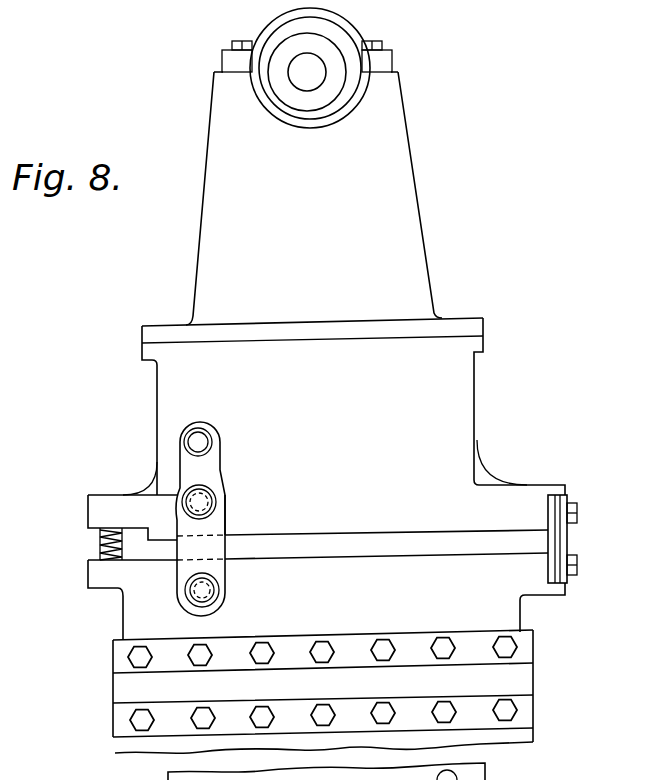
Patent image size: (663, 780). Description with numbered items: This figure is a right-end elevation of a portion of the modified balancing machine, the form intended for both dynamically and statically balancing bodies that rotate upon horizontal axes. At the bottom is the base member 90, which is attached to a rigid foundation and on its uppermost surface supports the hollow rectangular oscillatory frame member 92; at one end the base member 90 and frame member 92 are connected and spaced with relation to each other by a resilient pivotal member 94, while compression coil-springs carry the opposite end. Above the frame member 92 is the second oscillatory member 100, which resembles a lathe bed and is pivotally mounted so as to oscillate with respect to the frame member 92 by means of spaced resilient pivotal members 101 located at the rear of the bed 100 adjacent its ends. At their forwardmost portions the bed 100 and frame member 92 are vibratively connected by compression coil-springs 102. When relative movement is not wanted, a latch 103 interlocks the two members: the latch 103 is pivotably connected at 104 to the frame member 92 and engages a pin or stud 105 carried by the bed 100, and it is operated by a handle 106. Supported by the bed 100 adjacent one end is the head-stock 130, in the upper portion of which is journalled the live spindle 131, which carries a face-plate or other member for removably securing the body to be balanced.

The base member 90 is at (122, 745).
The oscillatory frame member 92 is at (326, 596).
The resilient pivotal member 94 is at (512, 677).
The second oscillatory member 100 is at (326, 429).
The resilient pivotal members 101 is at (560, 543).
The compression coil-springs 102 is at (100, 547).
The latch 103 is at (215, 524).
The pivotal connection 104 is at (213, 590).
The pin or stud 105 is at (203, 501).
The handle 106 is at (207, 441).
The head-stock 130 is at (314, 166).
The live spindle 131 is at (308, 84).